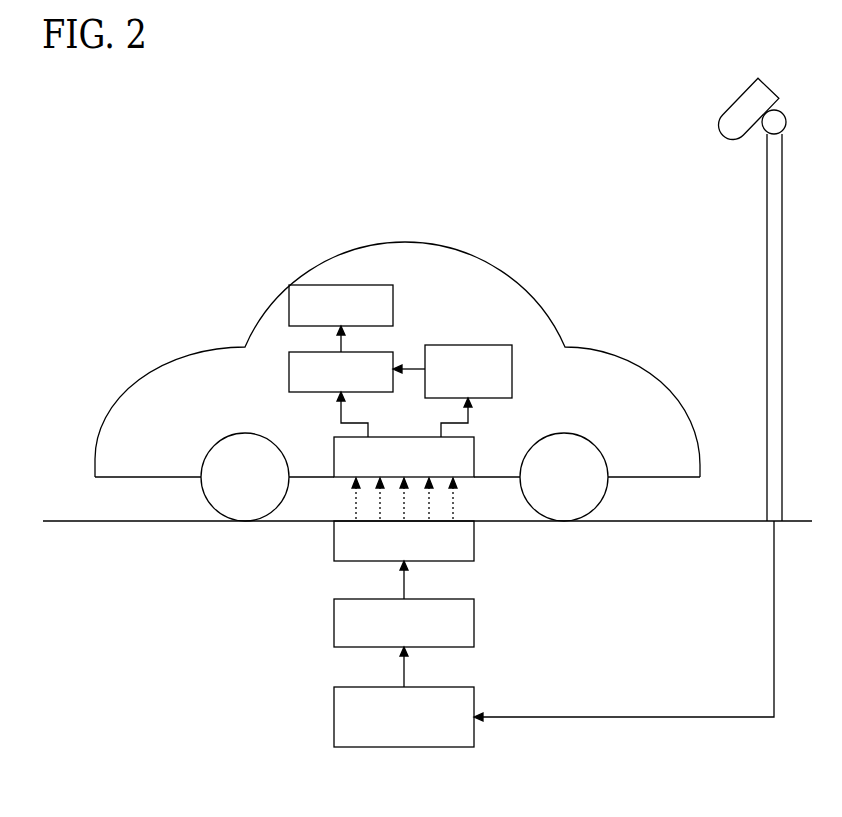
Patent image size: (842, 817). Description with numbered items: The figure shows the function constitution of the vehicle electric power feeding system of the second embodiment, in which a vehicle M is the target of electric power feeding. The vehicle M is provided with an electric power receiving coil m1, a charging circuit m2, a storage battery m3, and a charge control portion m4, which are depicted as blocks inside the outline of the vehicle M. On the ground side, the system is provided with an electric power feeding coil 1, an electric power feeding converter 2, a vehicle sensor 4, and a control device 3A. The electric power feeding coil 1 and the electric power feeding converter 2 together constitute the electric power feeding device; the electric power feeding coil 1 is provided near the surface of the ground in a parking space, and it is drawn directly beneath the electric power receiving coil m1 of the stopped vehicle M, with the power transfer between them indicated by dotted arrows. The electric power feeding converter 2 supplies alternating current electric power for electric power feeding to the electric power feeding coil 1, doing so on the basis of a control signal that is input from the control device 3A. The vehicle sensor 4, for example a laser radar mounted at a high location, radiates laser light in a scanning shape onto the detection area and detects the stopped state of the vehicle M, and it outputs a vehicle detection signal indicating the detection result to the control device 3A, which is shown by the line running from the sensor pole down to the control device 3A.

The vehicle M is at (577, 281).
The electric power receiving coil m1 is at (334, 450).
The charging circuit m2 is at (289, 370).
The storage battery m3 is at (393, 306).
The charge control portion m4 is at (482, 345).
The electric power feeding coil 1 is at (474, 541).
The electric power feeding converter 2 is at (474, 622).
The control device 3A is at (334, 713).
The vehicle sensor 4 is at (735, 103).